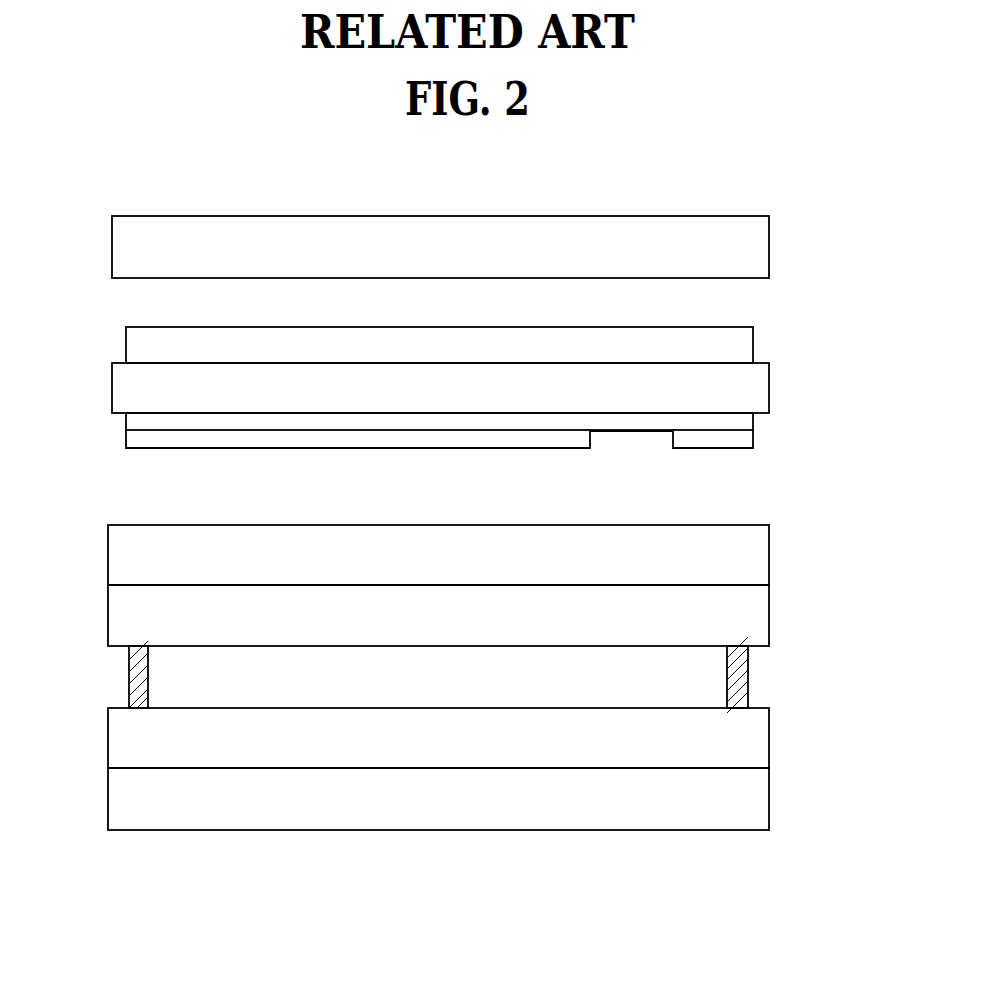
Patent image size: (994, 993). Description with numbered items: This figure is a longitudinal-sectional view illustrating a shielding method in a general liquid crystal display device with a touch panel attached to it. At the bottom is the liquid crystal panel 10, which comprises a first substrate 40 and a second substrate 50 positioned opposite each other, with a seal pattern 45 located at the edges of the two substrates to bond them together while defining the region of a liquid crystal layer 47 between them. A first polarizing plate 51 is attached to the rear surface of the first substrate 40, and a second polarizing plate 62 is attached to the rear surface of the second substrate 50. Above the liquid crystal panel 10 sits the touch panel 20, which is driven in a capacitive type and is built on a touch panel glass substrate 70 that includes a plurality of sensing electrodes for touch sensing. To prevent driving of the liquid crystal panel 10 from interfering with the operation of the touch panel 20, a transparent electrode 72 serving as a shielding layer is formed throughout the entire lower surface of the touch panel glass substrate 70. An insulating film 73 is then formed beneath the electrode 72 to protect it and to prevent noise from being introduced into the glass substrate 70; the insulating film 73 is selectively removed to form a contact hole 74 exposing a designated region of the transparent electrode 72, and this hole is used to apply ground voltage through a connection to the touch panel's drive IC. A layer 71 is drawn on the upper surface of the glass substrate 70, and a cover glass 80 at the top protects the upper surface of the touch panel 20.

The liquid crystal panel 10 is at (470, 677).
The touch panel 20 is at (510, 419).
The first substrate 40 is at (769, 739).
The seal pattern 45 is at (748, 675).
The liquid crystal layer 47 is at (158, 679).
The second substrate 50 is at (769, 620).
The first polarizing plate 51 is at (477, 799).
The second polarizing plate 62 is at (769, 558).
The touch panel glass substrate 70 is at (769, 390).
The upper adhesive layer 71 is at (753, 348).
The transparent electrode 72 is at (753, 422).
The insulating film 73 is at (753, 440).
The contact hole 74 is at (654, 447).
The cover glass 80 is at (769, 250).